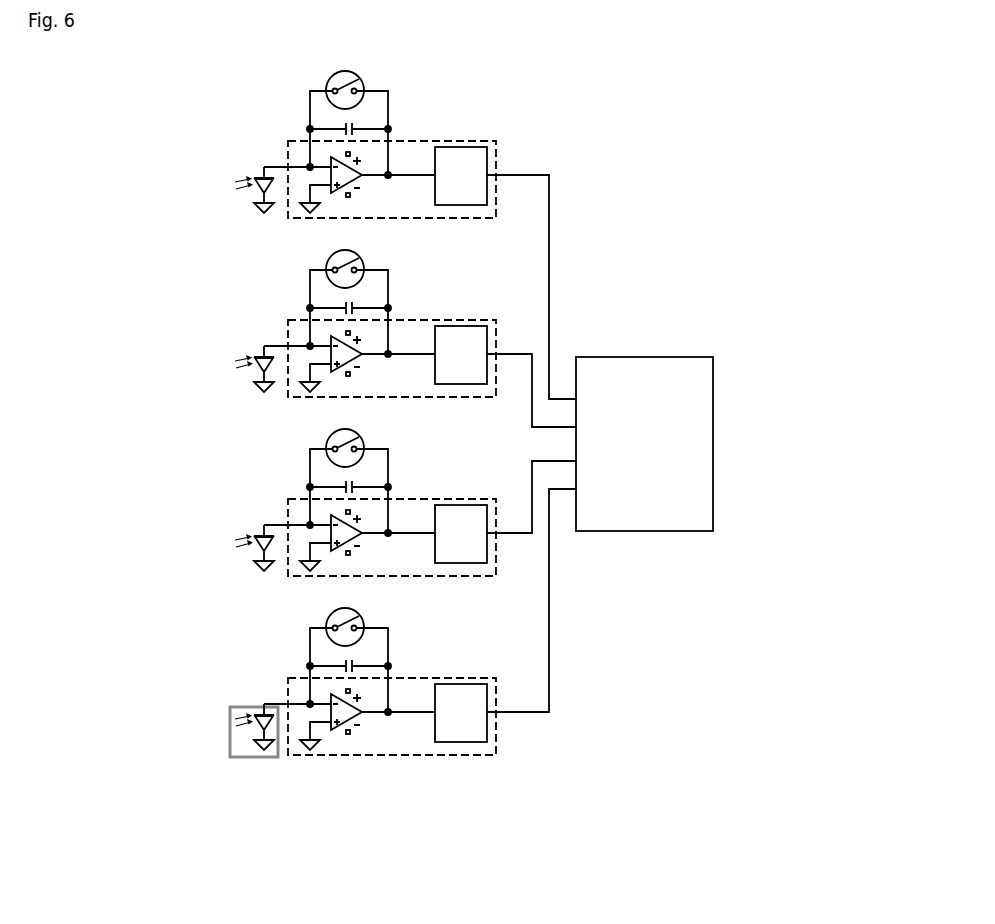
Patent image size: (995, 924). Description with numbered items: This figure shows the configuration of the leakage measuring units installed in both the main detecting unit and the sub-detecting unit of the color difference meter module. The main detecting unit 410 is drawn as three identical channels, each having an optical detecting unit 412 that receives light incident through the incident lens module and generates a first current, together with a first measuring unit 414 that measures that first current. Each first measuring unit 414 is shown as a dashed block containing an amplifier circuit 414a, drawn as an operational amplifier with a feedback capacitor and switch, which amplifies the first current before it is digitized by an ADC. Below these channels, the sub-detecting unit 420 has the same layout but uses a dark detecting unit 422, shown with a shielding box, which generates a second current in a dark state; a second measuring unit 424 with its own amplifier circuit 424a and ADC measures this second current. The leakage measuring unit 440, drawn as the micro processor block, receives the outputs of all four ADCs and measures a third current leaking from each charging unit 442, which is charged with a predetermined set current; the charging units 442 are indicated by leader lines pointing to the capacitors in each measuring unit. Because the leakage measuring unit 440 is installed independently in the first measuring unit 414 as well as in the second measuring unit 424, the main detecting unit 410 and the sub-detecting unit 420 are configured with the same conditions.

The main detecting unit 410 is at (212, 119).
The optical detecting unit 412 is at (258, 185).
The first measuring unit 414 is at (288, 145).
The amplifier circuit 414a is at (363, 178).
The sub-detecting unit 420 is at (241, 679).
The dark detecting unit 422 is at (235, 723).
The second measuring unit 424 is at (355, 681).
The amplifier circuit 424a is at (388, 739).
The leakage measuring unit 440 is at (698, 168).
The charging unit 442 is at (353, 127).